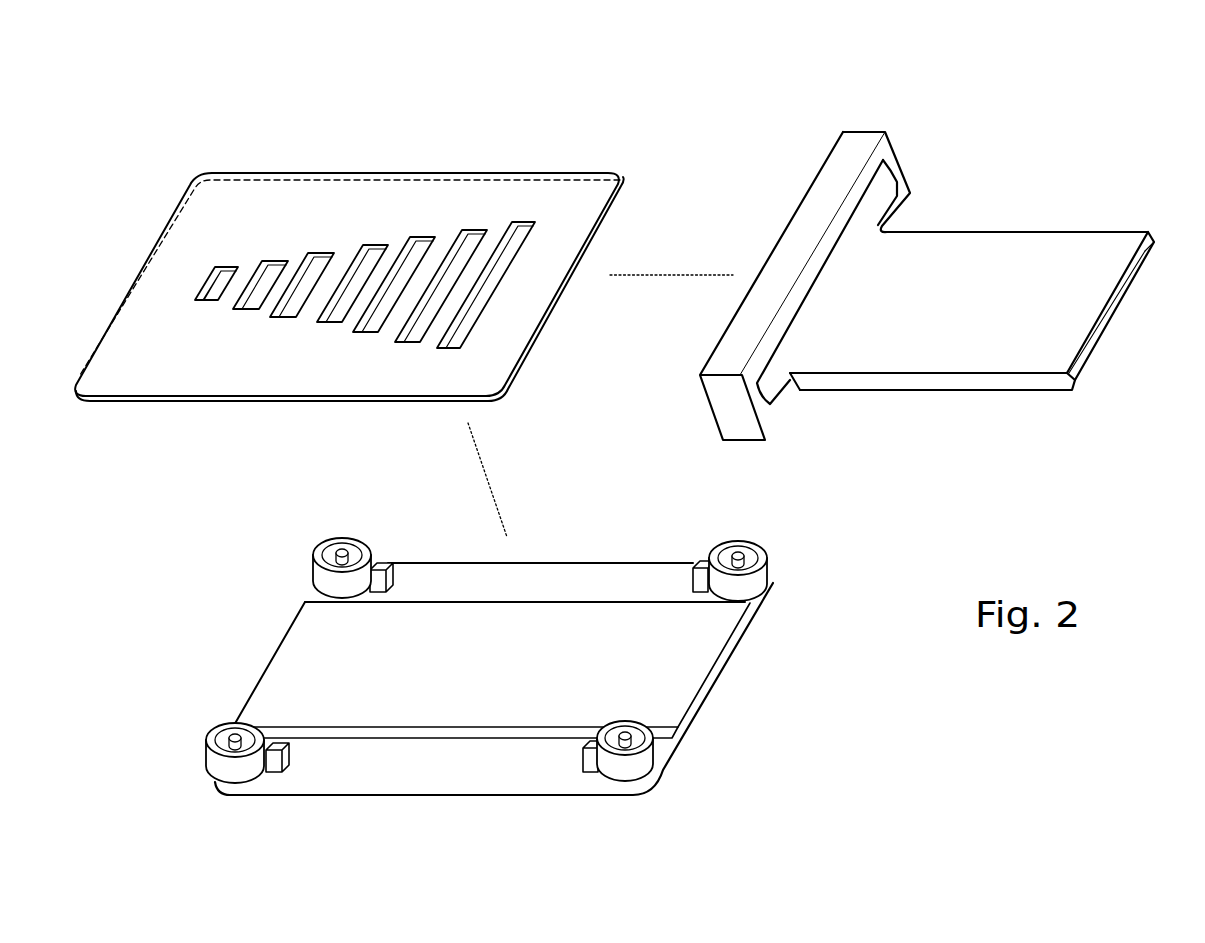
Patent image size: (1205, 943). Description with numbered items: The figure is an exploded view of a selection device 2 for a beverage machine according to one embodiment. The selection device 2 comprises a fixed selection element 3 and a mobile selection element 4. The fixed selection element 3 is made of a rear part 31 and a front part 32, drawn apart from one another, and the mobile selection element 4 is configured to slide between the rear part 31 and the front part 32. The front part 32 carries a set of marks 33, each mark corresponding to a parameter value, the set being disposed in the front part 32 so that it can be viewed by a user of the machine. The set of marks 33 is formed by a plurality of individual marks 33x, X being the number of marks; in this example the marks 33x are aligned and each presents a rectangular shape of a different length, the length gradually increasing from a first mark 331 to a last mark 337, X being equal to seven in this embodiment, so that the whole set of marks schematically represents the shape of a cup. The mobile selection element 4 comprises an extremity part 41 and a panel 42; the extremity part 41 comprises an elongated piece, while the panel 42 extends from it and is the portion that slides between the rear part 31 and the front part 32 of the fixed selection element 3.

The selection device 2 is at (194, 94).
The fixed selection element 3 is at (183, 507).
The mobile selection element 4 is at (913, 410).
The rear part 31 is at (338, 820).
The front part 32 is at (568, 158).
The set of marks 33 is at (314, 352).
The first mark 331 is at (234, 267).
The mark 33x is at (377, 246).
The last mark 337 is at (525, 222).
The extremity part 41 is at (860, 137).
The panel 42 is at (1100, 310).